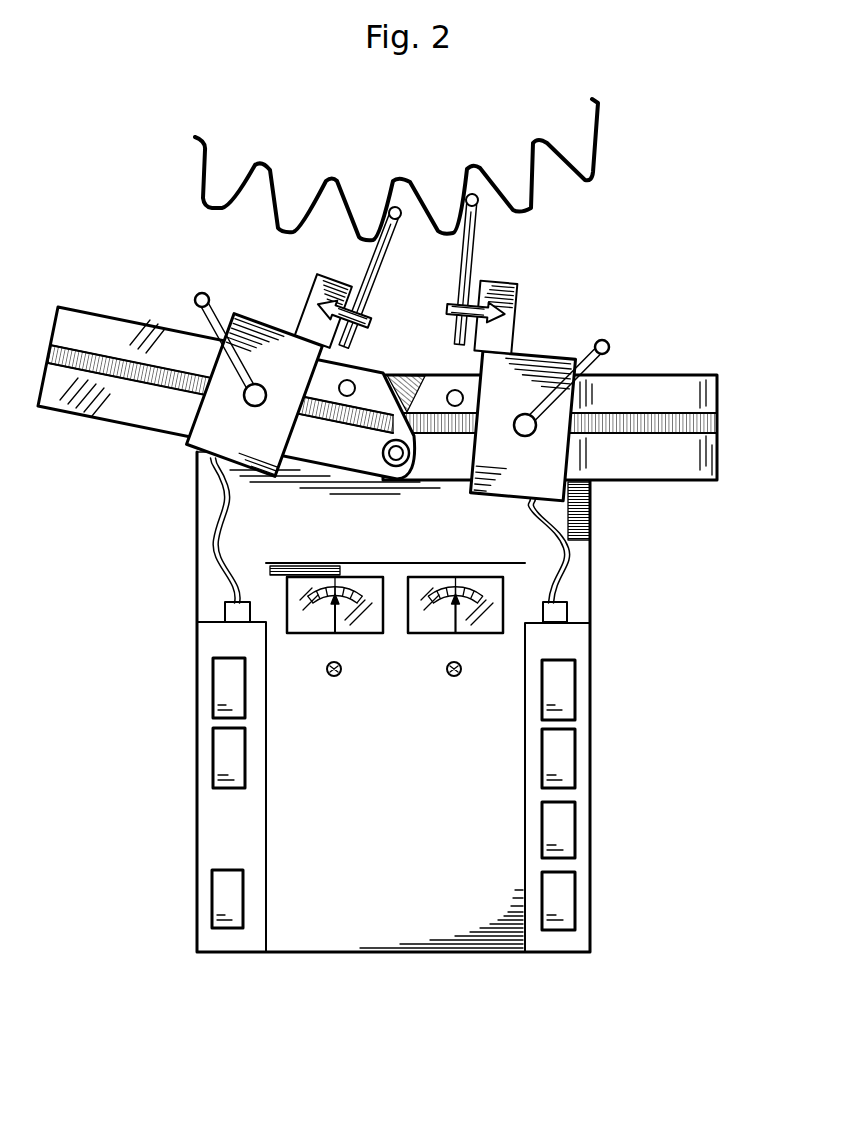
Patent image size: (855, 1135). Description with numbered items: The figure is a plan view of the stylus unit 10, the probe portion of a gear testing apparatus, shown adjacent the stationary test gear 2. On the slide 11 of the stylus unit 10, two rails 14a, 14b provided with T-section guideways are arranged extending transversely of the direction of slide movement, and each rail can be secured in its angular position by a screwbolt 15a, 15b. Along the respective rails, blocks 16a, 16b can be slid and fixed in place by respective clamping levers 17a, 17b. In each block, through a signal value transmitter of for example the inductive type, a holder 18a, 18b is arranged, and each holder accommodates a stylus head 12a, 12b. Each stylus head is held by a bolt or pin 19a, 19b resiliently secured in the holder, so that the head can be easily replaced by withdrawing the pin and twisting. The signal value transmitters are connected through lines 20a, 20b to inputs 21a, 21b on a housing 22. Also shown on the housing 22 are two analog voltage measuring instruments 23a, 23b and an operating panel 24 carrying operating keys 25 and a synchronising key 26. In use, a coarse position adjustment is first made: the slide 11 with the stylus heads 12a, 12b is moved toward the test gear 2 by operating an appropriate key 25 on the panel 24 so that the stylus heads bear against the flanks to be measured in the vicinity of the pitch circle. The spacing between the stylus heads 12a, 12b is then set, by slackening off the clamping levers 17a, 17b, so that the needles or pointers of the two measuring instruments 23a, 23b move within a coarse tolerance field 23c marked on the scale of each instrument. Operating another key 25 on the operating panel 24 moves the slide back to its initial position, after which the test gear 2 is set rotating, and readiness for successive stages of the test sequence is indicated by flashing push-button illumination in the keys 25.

The test gear 2 is at (197, 181).
The stylus unit 10 is at (192, 627).
The slide 11 is at (586, 572).
The stylus head 12a is at (384, 260).
The stylus head 12b is at (473, 244).
The rail 14a is at (105, 333).
The rail 14b is at (658, 378).
The screwbolt 15a is at (352, 382).
The screwbolt 15b is at (455, 390).
The block 16a is at (263, 330).
The block 16b is at (537, 353).
The clamping lever 17a is at (206, 294).
The clamping lever 17b is at (608, 342).
The holder 18a is at (308, 292).
The holder 18b is at (509, 286).
The pin 19a is at (368, 318).
The pin 19b is at (450, 311).
The line 20a is at (212, 520).
The line 20b is at (572, 528).
The input 21a is at (225, 611).
The input 21b is at (567, 612).
The housing 22 is at (337, 920).
The voltage measuring instrument 23a is at (367, 636).
The voltage measuring instrument 23b is at (488, 636).
The coarse tolerance field 23c is at (455, 588).
The operating panel 24 is at (212, 818).
The operating keys 25 is at (222, 750).
The synchronising key 26 is at (212, 898).